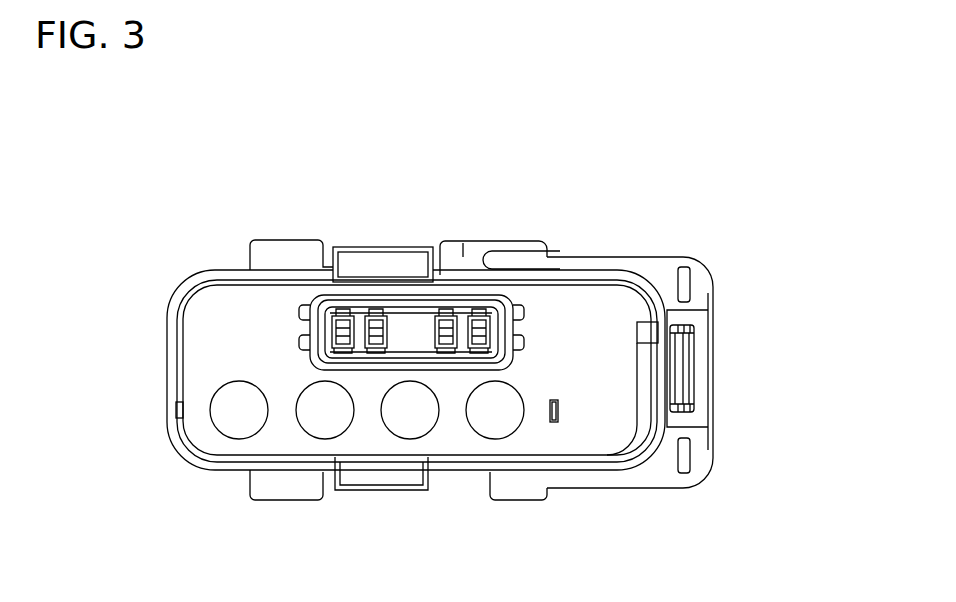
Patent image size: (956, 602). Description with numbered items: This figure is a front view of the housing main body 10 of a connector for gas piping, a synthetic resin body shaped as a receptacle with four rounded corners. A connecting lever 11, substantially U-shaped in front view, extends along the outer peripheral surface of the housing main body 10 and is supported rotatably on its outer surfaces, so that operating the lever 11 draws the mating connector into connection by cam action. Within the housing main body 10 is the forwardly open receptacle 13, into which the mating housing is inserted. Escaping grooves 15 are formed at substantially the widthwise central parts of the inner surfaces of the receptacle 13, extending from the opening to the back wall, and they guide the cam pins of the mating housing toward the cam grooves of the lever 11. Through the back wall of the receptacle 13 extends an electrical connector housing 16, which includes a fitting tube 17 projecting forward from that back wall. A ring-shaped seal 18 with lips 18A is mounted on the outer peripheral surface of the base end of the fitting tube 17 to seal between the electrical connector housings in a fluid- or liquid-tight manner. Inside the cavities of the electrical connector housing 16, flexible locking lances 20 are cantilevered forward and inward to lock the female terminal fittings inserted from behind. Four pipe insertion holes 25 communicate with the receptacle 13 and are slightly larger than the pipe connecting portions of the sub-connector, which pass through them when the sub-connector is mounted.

The housing main body 10 is at (333, 198).
The connecting lever 11 is at (707, 450).
The receptacle 13 is at (182, 372).
The escaping groove 15 is at (427, 263).
The electrical connector housing 16 is at (451, 382).
The fitting tube 17 is at (331, 307).
The ring-shaped seal 18 is at (446, 303).
The lip 18A is at (472, 297).
The flexible locking lance 20 is at (378, 322).
The pipe insertion hole 25 is at (231, 434).